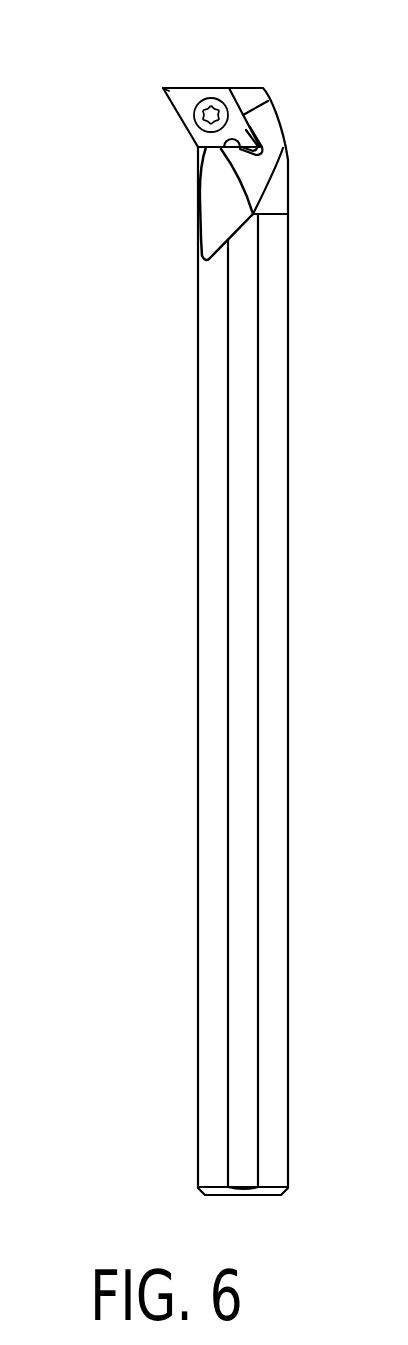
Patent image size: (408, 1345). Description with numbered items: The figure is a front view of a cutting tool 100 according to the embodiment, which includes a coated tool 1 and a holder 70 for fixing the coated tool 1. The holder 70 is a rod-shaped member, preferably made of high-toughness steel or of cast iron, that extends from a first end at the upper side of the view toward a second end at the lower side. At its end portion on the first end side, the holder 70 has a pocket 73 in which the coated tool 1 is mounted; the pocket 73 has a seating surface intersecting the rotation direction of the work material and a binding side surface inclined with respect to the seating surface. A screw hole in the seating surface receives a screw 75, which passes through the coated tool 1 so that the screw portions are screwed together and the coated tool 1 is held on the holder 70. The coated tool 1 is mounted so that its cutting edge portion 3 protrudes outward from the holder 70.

The cutting tool 100 is at (76, 37).
The coated tool 1 is at (188, 112).
The cutting edge portion 3 is at (165, 84).
The holder 70 is at (176, 428).
The pocket 73 is at (205, 185).
The screw 75 is at (226, 112).